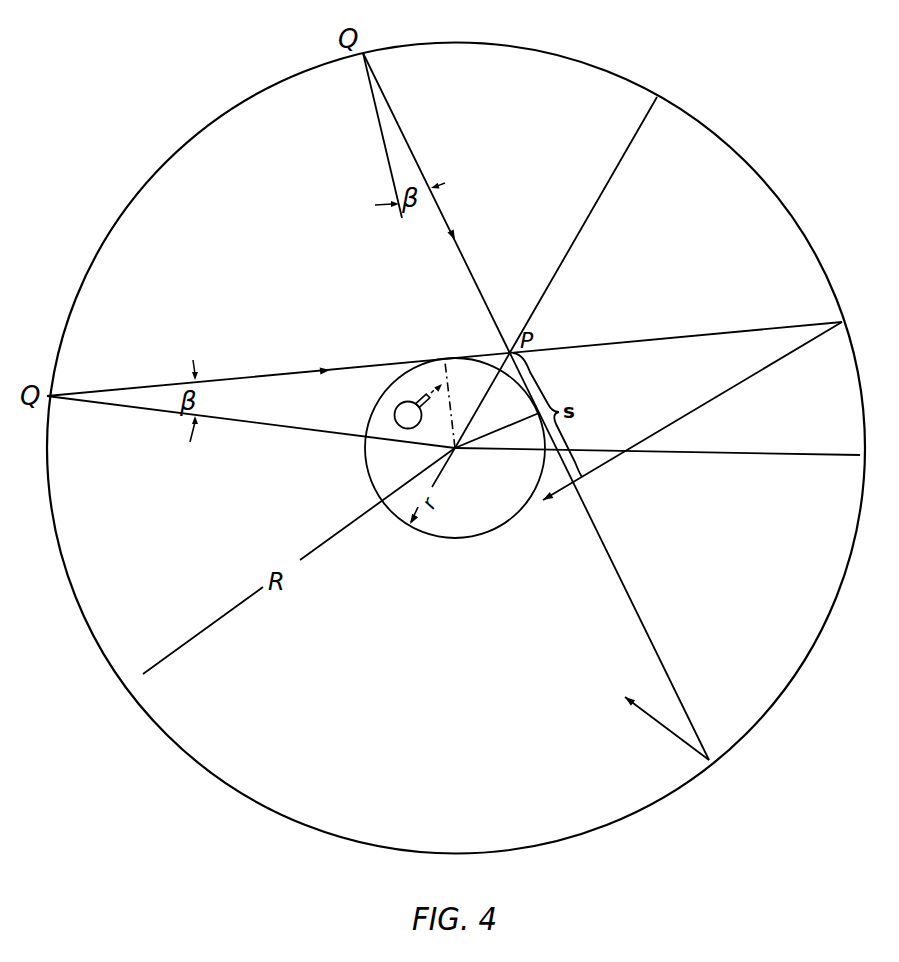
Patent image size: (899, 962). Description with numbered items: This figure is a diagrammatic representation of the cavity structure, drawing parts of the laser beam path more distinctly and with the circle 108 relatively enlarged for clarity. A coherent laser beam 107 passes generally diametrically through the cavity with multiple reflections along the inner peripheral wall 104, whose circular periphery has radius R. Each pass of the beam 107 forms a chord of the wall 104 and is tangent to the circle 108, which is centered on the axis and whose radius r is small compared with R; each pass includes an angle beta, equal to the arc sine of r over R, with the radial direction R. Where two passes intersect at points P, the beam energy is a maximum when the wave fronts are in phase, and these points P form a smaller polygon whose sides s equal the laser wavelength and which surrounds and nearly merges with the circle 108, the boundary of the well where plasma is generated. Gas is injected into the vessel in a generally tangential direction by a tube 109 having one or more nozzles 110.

The wall 104 is at (665, 795).
The coherent laser beam 107 is at (628, 590).
The circle 108 is at (487, 535).
The tube 109 is at (395, 414).
The nozzles 110 is at (421, 397).